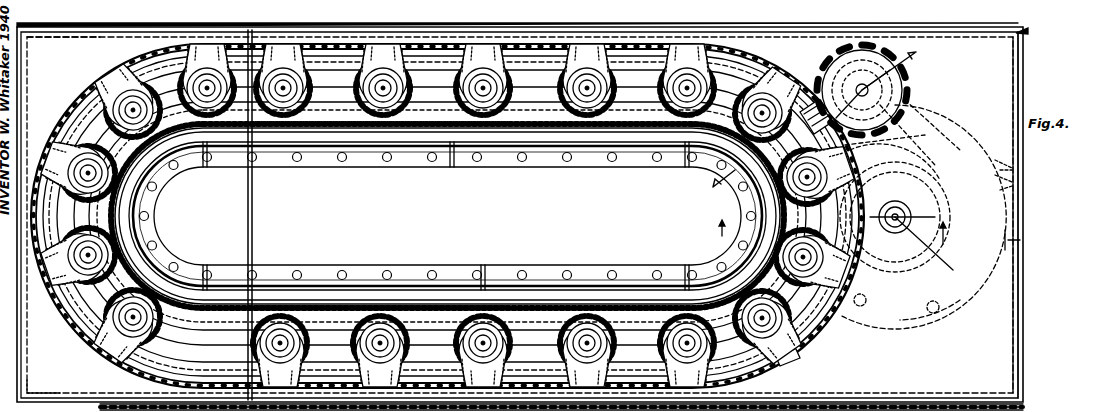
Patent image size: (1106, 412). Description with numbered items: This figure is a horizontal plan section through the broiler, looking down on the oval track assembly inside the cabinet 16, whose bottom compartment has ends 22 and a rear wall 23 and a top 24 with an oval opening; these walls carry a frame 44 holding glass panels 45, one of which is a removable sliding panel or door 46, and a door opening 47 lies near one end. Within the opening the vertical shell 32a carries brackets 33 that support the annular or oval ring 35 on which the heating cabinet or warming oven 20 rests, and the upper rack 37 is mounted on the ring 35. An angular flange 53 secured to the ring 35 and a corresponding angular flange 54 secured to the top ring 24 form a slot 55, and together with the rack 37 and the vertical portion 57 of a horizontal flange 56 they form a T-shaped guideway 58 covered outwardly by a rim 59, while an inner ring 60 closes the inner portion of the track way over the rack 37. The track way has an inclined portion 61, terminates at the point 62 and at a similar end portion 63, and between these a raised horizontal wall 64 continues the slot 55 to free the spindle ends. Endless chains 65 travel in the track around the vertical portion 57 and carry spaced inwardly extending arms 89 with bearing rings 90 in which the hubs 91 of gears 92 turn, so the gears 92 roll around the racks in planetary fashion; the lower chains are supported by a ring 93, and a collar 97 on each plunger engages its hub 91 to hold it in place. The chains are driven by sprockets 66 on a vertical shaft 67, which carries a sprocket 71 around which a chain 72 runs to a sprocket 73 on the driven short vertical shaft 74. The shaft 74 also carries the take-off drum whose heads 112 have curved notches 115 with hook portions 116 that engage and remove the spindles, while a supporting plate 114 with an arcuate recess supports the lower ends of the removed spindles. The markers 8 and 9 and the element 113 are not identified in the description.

The section line 8- 8 is at (828, 221).
The section line 9- 9 is at (812, 118).
The cabinet 16 is at (1009, 92).
The heating cabinet or warming oven 20 is at (167, 160).
The ends 22 is at (1017, 343).
The rear wall 23 is at (72, 48).
The top 24 is at (1008, 370).
The vertical shell 32a is at (160, 238).
The brackets 33 is at (205, 160).
The annular or oval ring 35 is at (453, 144).
The upper rack 37 is at (176, 262).
The frame 44 is at (74, 387).
The panels 45 is at (1028, 32).
The removable panel or door 46 is at (1013, 45).
The door opening 47 is at (1012, 401).
The angular flange 53 is at (450, 108).
The angular flange 54 is at (642, 75).
The slot 55 is at (516, 105).
The horizontal flange 56 is at (68, 116).
The vertical portion 57 is at (74, 104).
The T-shaped guideway 58 is at (75, 138).
The rim 59 is at (82, 98).
The inner ring 60 is at (244, 132).
The inclined portion 61 is at (812, 82).
The point 62 is at (918, 132).
The end portion 63 is at (780, 372).
The raised part or horizontal wall 64 is at (814, 322).
The endless drive members or chains 65 is at (124, 66).
The sprockets 66 is at (905, 76).
The vertical shaft 67 is at (898, 92).
The sprocket 71 is at (920, 102).
The chain 72 is at (952, 134).
The sprocket 73 is at (933, 144).
The short vertical shaft 74 is at (905, 215).
The inwardly extending arms 89 is at (80, 268).
The bearing rings 90 is at (86, 270).
The hubs 91 is at (370, 95).
The gears 92 is at (108, 295).
The ring 93 is at (154, 206).
The collar 97 is at (98, 276).
The heads 112 is at (1008, 269).
The crank 113 is at (936, 249).
The supporting plate 114 is at (1008, 240).
The curved notches 115 is at (1012, 184).
The hook portions 116 is at (1014, 166).